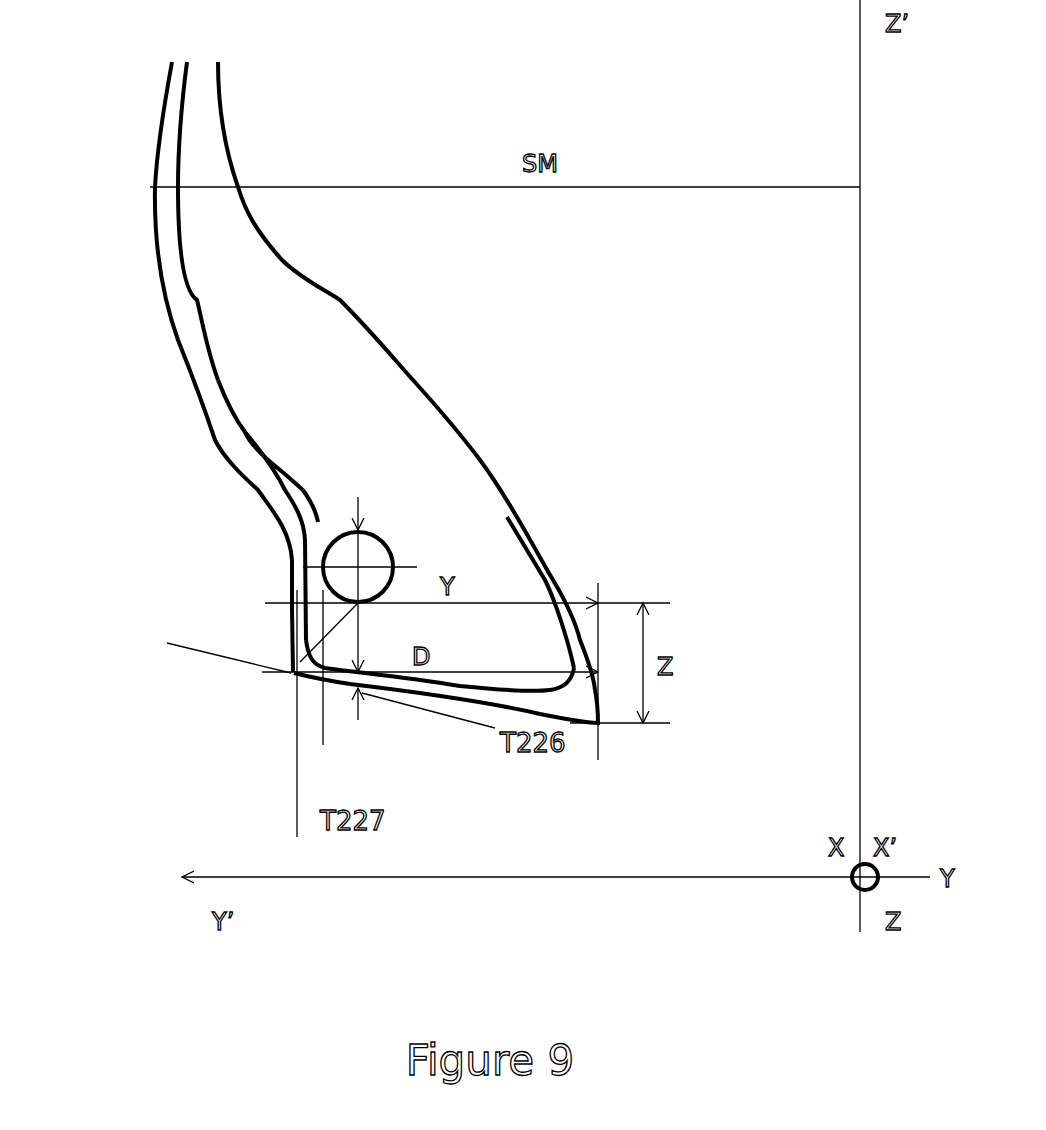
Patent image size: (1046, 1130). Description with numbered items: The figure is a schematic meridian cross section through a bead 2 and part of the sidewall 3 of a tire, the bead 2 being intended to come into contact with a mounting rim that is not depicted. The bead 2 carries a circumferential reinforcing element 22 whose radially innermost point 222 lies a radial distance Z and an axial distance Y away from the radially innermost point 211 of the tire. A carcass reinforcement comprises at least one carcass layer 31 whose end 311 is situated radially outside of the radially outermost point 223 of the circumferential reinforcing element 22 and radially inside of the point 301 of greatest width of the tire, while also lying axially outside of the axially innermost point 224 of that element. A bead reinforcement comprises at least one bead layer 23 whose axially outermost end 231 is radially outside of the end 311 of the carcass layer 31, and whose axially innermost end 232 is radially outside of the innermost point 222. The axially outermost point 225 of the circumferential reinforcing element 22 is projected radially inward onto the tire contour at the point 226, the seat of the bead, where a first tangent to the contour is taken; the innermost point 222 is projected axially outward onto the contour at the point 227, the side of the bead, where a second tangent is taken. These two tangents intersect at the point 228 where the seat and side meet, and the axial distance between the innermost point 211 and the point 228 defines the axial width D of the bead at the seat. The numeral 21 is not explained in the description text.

The bead 2 is at (435, 400).
The sidewall 3 is at (170, 75).
The rim flange inner side 21 is at (468, 640).
The circumferential reinforcing element 22 is at (372, 548).
The bead layer 23 is at (275, 483).
The carcass layer 31 is at (182, 155).
The radially innermost point of the tire 211 is at (601, 727).
The radially innermost point of the circumferential reinforcing element 222 is at (290, 674).
The radially outermost point of the circumferential reinforcing element 223 is at (325, 552).
The axially innermost point of the circumferential reinforcing element 224 is at (397, 556).
The axially outermost point of the circumferential reinforcing element 225 is at (298, 535).
The interior radial projection 226 is at (323, 690).
The external axial projection 227 is at (290, 601).
The intersection point 228 is at (290, 680).
The axially outermost end of the bead layer 231 is at (230, 440).
The axially innermost end of the bead layer 232 is at (503, 523).
The point of greatest width of the tire 301 is at (152, 187).
The end of the carcass layer 311 is at (320, 518).